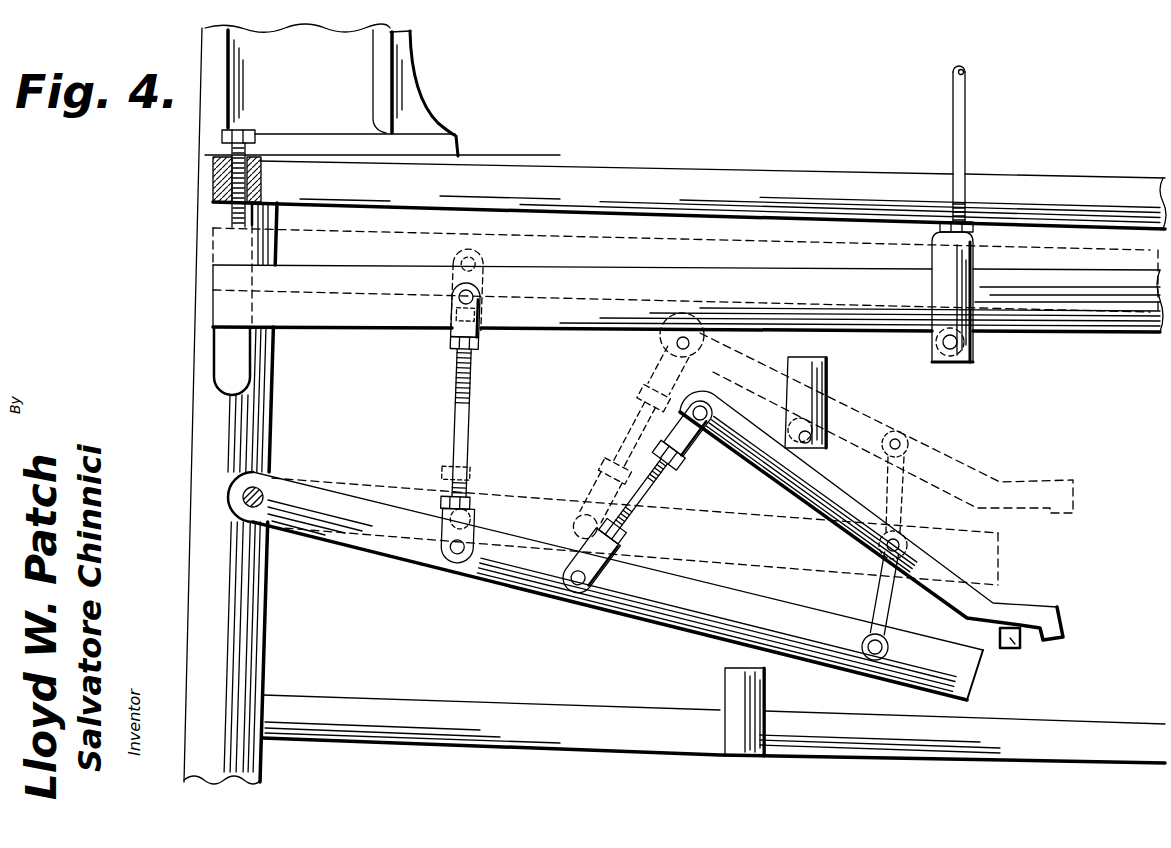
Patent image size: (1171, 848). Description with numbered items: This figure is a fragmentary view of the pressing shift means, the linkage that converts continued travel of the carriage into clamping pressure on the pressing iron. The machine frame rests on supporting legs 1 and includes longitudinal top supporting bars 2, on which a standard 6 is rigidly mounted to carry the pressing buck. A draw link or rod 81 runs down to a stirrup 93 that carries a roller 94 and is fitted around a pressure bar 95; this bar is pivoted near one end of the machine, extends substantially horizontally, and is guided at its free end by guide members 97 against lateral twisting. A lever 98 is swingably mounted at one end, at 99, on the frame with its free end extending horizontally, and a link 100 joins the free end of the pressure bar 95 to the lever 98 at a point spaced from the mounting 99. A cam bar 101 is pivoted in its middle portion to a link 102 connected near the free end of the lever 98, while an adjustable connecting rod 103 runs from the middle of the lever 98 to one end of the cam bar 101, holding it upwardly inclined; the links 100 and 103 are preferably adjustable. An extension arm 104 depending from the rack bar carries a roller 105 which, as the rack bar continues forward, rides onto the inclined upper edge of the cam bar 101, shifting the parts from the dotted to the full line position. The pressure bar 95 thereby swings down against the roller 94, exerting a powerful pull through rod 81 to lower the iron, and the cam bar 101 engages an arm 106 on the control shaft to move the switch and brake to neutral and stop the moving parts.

The supporting legs 1 is at (198, 440).
The top supporting bars 2 is at (683, 173).
The standard 6 is at (409, 72).
The draw link or rod 81 is at (960, 103).
The stirrup 93 is at (976, 333).
The roller 94 is at (956, 352).
The pressure bar 95 is at (1119, 325).
The guide members 97 is at (224, 352).
The lever 98 is at (658, 616).
The swinging mounting 99 is at (279, 477).
The link 100 is at (471, 409).
The cam bar 101 is at (1000, 604).
The link 102 is at (884, 593).
The adjustable link or connecting rod 103 is at (652, 485).
The extension arm 104 is at (815, 389).
The roller 105 is at (860, 418).
The arm 106 is at (1013, 641).